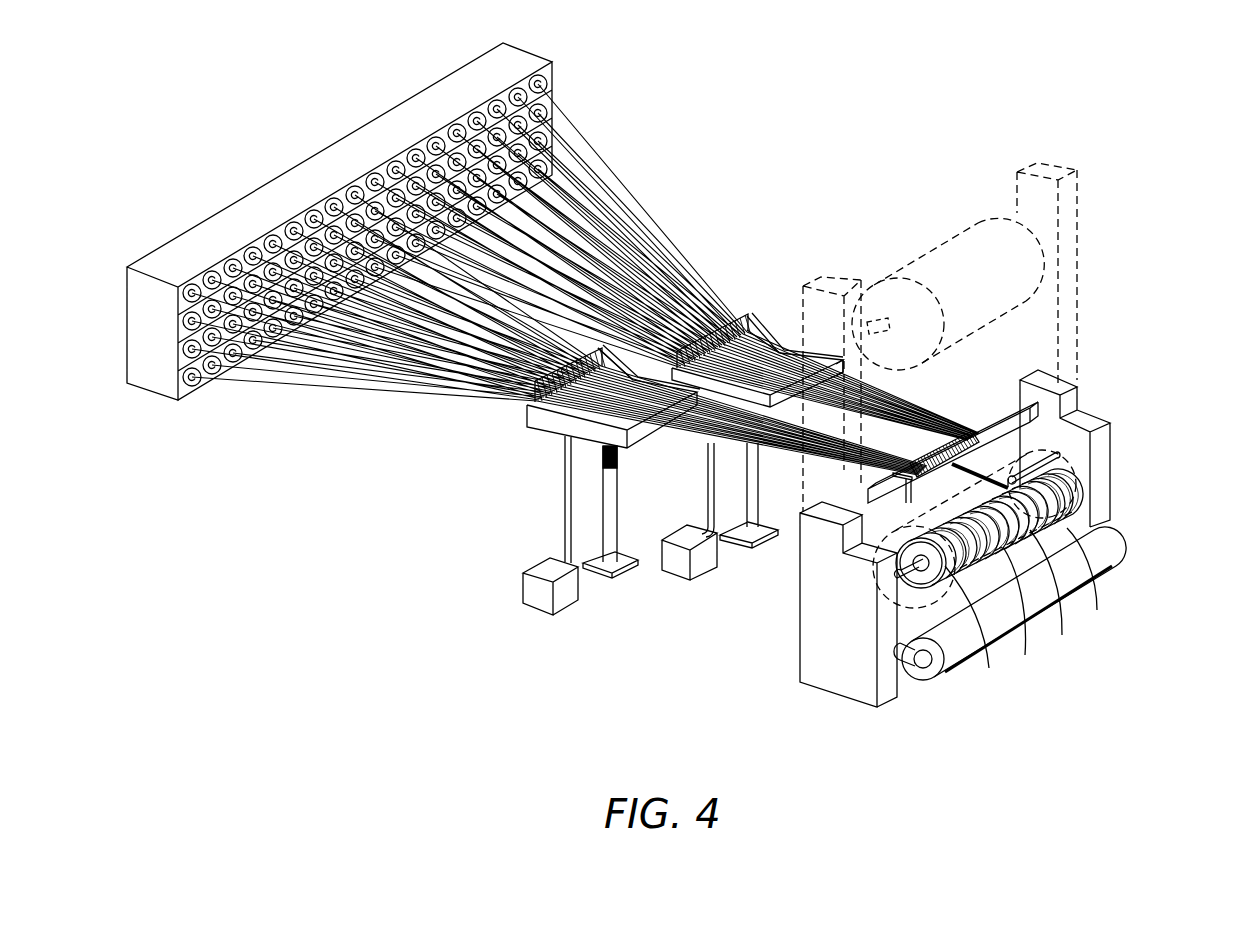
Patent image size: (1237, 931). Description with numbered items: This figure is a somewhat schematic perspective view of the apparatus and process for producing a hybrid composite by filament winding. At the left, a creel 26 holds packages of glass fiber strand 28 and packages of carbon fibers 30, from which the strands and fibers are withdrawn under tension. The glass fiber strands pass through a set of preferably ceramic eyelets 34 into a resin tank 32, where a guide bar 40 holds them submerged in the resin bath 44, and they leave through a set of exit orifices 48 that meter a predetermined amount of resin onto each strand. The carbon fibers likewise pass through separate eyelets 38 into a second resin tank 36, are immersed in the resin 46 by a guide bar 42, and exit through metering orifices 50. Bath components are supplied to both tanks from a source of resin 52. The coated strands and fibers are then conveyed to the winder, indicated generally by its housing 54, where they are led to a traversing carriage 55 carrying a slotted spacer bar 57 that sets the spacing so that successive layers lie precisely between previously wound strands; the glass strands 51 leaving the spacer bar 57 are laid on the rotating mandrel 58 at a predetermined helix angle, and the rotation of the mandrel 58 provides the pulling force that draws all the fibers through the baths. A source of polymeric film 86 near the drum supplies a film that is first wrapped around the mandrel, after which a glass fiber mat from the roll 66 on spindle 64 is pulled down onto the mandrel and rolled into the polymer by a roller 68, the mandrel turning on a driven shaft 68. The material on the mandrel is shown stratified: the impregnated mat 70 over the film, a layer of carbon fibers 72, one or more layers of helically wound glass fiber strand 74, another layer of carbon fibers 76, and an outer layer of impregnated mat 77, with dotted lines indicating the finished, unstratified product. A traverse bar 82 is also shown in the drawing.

The creel 26 is at (371, 221).
The packages of glass fiber strand 28 is at (553, 76).
The packages of high performance reinforcing continuous fibrous bundles (carbon fibe 30 is at (200, 355).
The resin tank 32 is at (790, 376).
The eyelets 34 is at (748, 312).
The resin tank 36 is at (566, 461).
The eyelets 38 is at (533, 393).
The guide bar 40 is at (790, 376).
The guide bar 42 is at (540, 420).
The resin bath 44 is at (759, 345).
The resin 46 is at (568, 434).
The exit orifices 48 is at (843, 372).
The exit orifices 50 is at (618, 451).
The glass fiber strands 51 is at (885, 398).
The source of resin 52 is at (523, 578).
The winder housing 54 is at (801, 591).
The traversing carriage 55 is at (893, 474).
The spacer bar 57 is at (971, 430).
The mandrel (drum) 58 is at (1090, 448).
The spindle 64 is at (869, 321).
The mat roll 66 is at (945, 232).
The roller / shaft 68 is at (1058, 456).
The impregnated mat 70 is at (989, 668).
The carbon fibers 72 is at (1025, 655).
The glass fiber strand layers 74 is at (1062, 635).
The carbon fibers 76 is at (1097, 610).
The impregnated mat 77 is at (1103, 557).
The traverse bar 82 is at (982, 432).
The source of polymeric film 86 is at (1110, 540).